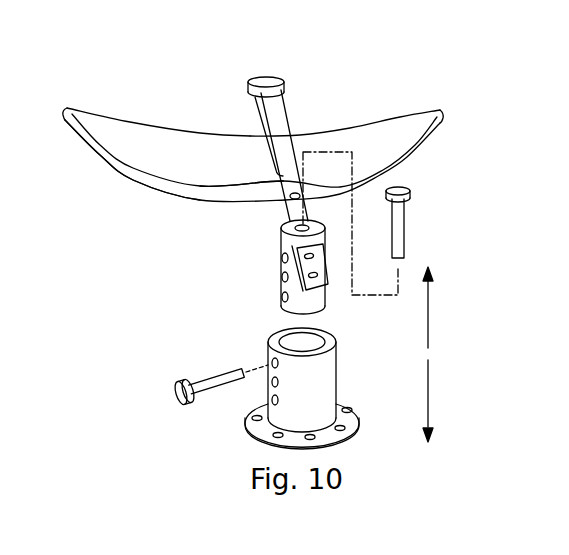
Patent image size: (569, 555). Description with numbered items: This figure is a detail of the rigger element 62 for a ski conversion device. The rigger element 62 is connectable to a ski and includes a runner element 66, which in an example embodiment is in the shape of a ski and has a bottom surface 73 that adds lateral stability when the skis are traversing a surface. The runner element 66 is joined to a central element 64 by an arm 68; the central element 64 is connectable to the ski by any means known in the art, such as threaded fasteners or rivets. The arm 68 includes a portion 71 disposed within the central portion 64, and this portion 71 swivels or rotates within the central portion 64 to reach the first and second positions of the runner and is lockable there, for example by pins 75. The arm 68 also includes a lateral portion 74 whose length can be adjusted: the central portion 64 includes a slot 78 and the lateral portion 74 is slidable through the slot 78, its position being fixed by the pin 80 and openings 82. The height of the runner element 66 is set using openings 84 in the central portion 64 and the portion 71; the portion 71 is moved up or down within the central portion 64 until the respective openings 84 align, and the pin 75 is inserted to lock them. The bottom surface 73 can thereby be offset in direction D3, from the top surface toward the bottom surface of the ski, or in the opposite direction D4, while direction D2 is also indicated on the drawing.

The rigger element 62 is at (148, 99).
The runner element 66 is at (389, 105).
The arm 68 is at (262, 158).
The portion of arm 71 is at (327, 294).
The bottom surface of runner 73 is at (137, 185).
The lateral portion 74 is at (290, 177).
The pin 75 is at (205, 380).
The slot 78 is at (284, 248).
The pin 80 is at (406, 220).
The openings 82 is at (305, 222).
The openings 84 is at (278, 274).
The central element 64 is at (338, 363).
The direction D2 is at (30, 0).
The direction D3 is at (429, 398).
The direction D4 is at (429, 323).